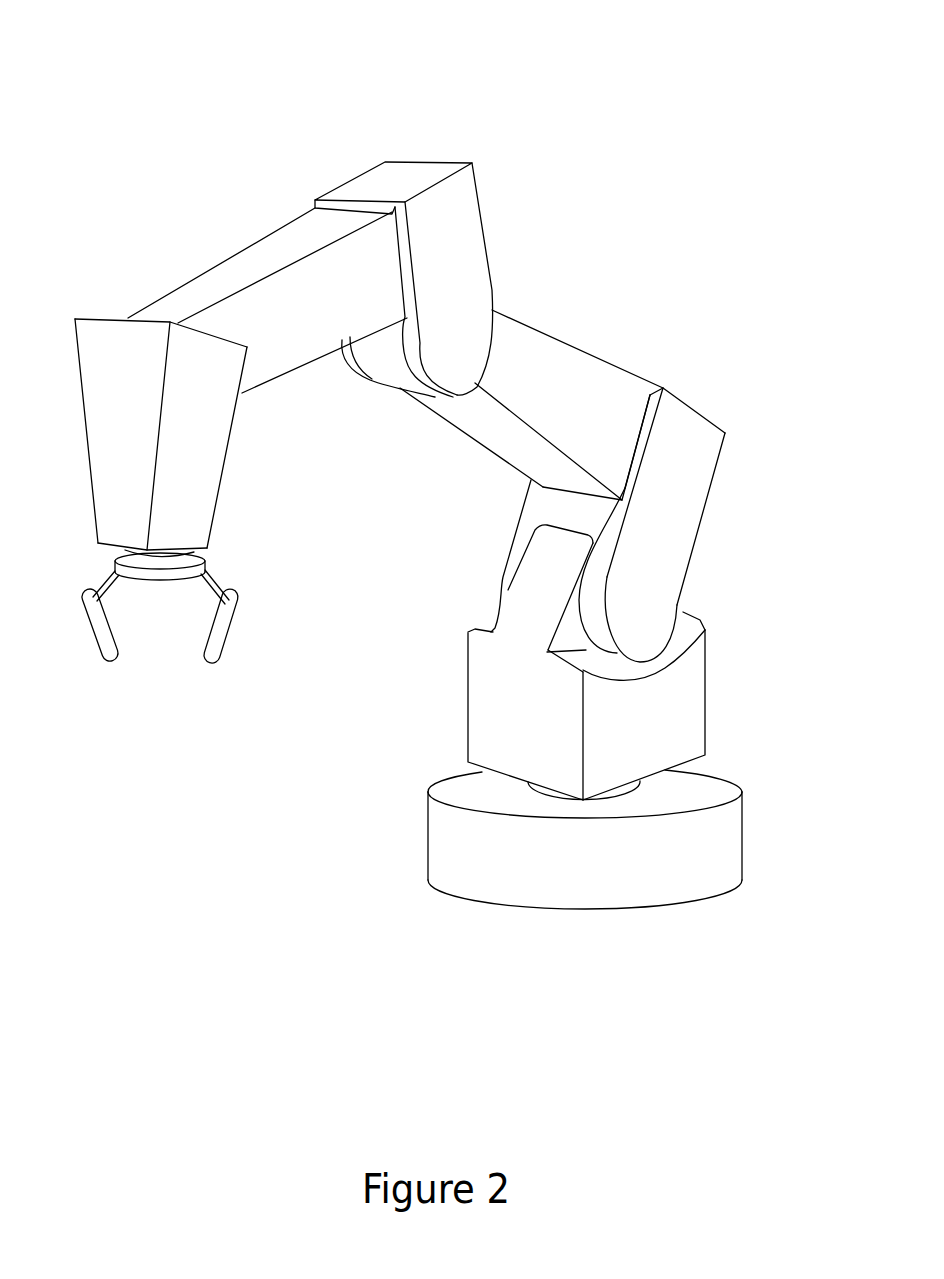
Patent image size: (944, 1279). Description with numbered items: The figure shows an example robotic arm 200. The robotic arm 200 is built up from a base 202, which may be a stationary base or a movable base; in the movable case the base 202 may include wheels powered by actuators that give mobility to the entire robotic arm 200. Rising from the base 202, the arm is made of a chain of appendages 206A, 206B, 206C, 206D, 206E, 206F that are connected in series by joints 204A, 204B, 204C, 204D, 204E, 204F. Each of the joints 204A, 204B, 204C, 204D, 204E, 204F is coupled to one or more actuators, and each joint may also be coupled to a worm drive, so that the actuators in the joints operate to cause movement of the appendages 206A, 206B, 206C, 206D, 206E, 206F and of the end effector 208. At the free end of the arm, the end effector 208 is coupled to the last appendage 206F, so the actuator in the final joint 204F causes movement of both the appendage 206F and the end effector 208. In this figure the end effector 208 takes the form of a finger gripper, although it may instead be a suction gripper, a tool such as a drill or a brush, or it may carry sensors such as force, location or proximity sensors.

The robotic arm 200 is at (117, 85).
The base 202 is at (715, 852).
The joint 204A is at (532, 793).
The joint 204B is at (663, 612).
The joint 204C is at (717, 468).
The joint 204D is at (453, 370).
The joint 204E is at (478, 195).
The joint 204F is at (128, 318).
The appendage 206A is at (688, 718).
The appendage 206B is at (690, 532).
The appendage 206C is at (593, 372).
The appendage 206D is at (467, 262).
The appendage 206E is at (260, 257).
The appendage 206F is at (188, 443).
The end effector 208 is at (227, 607).